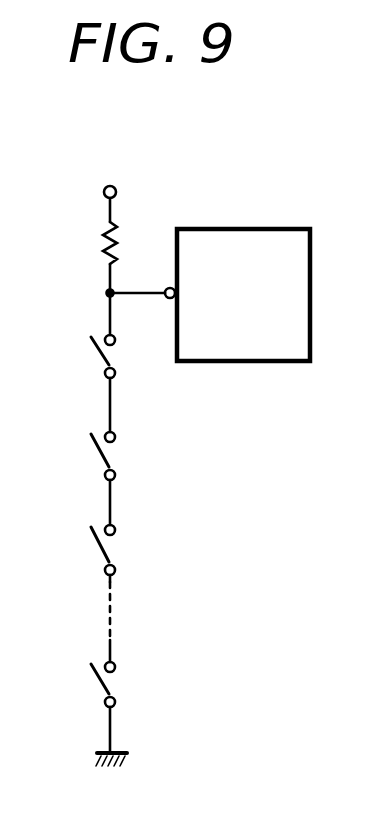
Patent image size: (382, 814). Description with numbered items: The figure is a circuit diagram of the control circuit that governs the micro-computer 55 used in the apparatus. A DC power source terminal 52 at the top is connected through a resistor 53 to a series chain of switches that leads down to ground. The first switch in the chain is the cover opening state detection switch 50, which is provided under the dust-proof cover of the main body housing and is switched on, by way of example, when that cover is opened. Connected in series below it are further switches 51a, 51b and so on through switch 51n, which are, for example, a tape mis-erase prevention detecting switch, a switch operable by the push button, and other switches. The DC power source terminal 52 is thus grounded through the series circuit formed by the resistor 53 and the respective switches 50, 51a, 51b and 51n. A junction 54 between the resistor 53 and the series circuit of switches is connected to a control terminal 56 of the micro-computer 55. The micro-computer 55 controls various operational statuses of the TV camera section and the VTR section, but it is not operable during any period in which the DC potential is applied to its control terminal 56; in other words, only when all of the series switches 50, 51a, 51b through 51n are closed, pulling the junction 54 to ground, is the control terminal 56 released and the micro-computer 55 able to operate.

The cover opening state detection switch 50 is at (90, 354).
The switch 51a is at (97, 457).
The switch 51b is at (97, 550).
The switch 51n is at (97, 686).
The DC power source terminal 52 is at (110, 186).
The resistor 53 is at (102, 245).
The junction 54 is at (108, 294).
The micro-computer 55 is at (254, 229).
The control terminal 56 is at (166, 299).